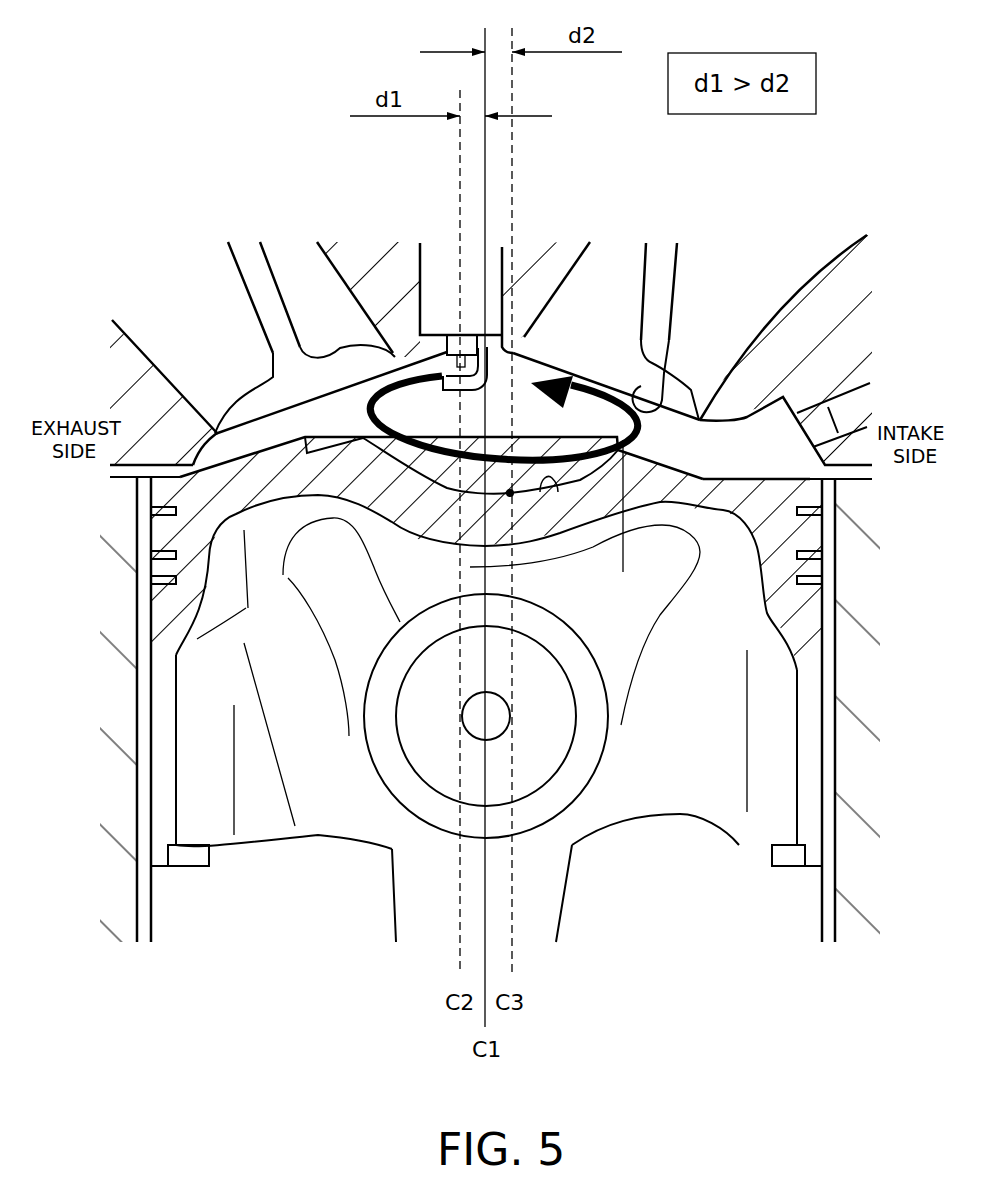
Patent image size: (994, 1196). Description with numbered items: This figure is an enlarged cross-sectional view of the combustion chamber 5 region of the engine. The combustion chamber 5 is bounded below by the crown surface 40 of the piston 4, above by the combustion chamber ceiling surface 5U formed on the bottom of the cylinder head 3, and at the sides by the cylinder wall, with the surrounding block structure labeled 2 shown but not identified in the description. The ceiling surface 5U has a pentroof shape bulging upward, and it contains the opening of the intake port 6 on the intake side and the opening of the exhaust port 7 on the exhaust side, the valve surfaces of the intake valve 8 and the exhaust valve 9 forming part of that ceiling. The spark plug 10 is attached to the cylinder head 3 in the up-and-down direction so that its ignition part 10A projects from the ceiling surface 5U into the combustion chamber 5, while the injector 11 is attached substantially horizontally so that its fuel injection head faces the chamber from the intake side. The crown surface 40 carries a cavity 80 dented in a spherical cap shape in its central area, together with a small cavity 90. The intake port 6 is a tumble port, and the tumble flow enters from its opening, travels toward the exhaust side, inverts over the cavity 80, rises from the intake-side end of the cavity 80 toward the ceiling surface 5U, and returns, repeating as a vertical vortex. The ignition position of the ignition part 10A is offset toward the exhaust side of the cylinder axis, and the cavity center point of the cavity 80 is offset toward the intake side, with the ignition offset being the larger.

The cylinder block 2 is at (130, 602).
The cylinder head 3 is at (128, 375).
The piston 4 is at (803, 623).
The combustion chamber 5 is at (486, 549).
The combustion chamber ceiling surface 5U is at (661, 408).
The intake port 6 is at (778, 273).
The exhaust port 7 is at (175, 273).
The intake valve 8 is at (594, 340).
The exhaust valve 9 is at (328, 330).
The spark plug 10 is at (419, 261).
The ignition part 10A is at (405, 345).
The injector 11 is at (843, 410).
The crown surface 40 is at (529, 428).
The cavity 80 is at (564, 491).
The small cavity 90 is at (703, 481).